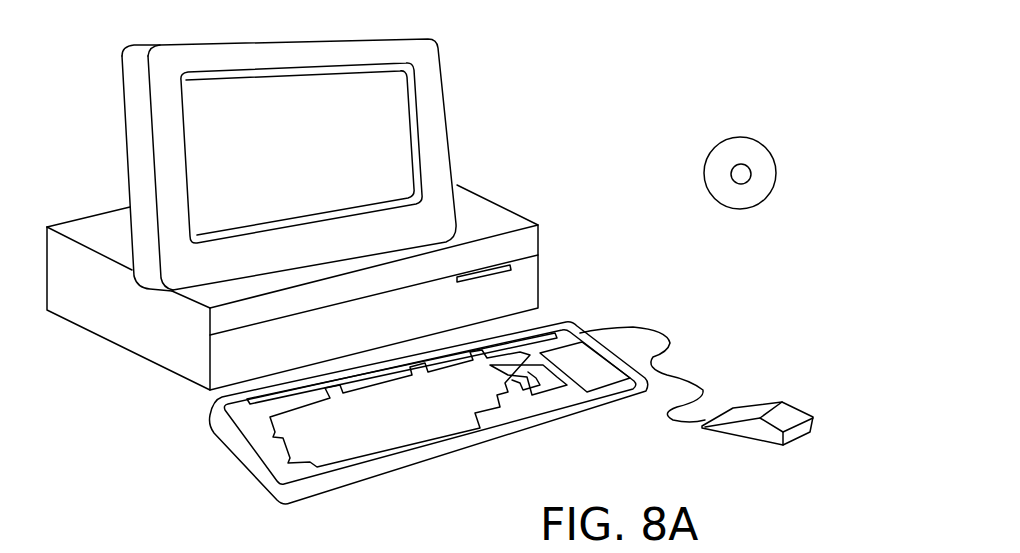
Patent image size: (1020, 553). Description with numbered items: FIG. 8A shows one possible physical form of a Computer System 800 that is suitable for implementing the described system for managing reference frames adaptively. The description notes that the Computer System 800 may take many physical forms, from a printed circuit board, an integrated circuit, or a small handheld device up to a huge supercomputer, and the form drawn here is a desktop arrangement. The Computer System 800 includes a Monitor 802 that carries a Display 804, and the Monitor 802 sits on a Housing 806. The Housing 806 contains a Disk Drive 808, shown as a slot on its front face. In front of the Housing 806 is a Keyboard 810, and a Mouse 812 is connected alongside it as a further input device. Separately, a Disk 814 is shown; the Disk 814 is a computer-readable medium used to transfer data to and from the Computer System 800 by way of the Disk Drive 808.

The computer system 800 is at (646, 113).
The monitor 802 is at (443, 162).
The display 804 is at (398, 103).
The housing 806 is at (170, 370).
The disk drive 808 is at (503, 263).
The keyboard 810 is at (425, 452).
The mouse 812 is at (792, 410).
The disk 814 is at (758, 140).